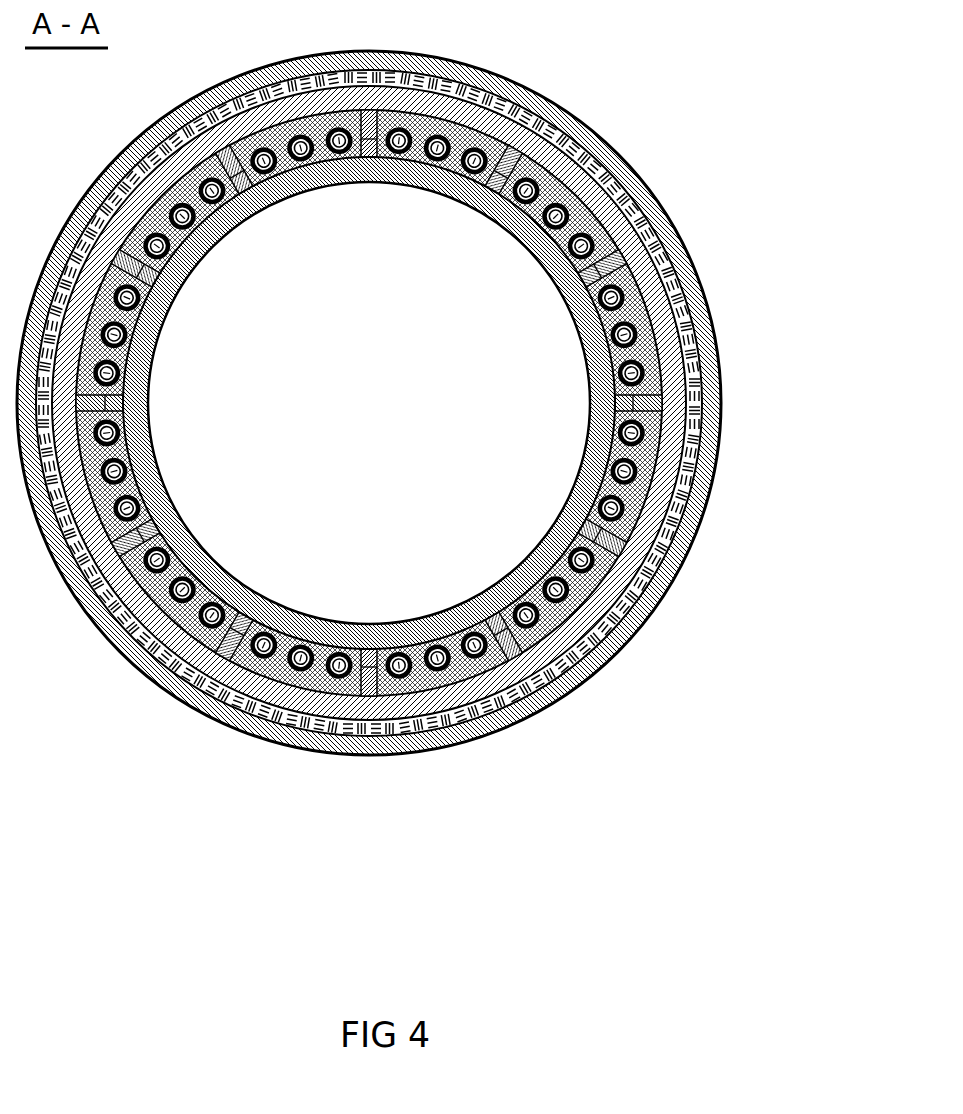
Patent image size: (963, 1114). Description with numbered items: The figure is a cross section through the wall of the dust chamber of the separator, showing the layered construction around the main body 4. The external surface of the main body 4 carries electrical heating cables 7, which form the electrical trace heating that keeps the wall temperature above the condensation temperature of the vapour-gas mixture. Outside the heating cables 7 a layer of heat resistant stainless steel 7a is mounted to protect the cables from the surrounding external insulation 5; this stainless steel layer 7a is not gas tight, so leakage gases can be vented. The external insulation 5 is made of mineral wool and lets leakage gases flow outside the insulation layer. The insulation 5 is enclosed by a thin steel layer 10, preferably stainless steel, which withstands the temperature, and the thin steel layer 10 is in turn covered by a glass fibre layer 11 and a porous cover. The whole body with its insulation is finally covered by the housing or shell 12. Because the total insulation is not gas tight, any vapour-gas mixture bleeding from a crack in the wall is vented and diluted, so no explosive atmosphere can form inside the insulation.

The main body 4 is at (446, 484).
The external insulation 5 is at (185, 620).
The electrical heating cables 7 is at (340, 670).
The heat resistant stainless steel layer 7a is at (398, 672).
The thin steel layer 10 is at (620, 585).
The glass fibre layer 11 is at (693, 488).
The shell 12 is at (710, 374).